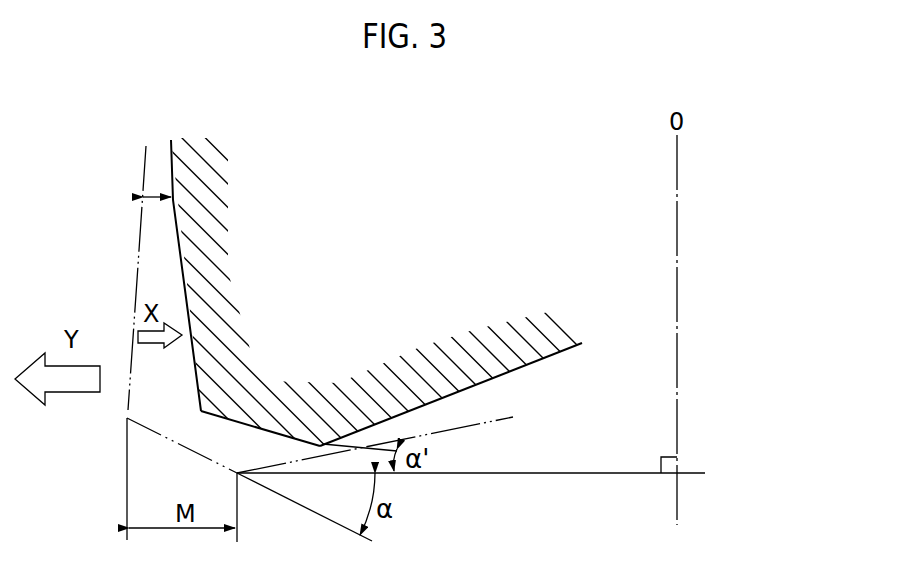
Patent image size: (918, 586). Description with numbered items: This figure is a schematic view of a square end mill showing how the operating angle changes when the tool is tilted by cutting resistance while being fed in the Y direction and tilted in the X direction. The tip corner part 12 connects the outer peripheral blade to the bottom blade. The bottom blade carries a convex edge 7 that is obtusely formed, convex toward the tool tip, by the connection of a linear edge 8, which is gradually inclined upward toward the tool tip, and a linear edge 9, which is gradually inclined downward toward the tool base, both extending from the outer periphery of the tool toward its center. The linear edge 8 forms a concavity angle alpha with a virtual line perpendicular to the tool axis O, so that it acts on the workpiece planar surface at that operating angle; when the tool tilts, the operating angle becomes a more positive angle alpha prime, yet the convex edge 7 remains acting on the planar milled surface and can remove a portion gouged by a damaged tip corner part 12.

The convex edge 7 is at (315, 446).
The linear edge 8 is at (223, 415).
The linear edge 9 is at (522, 367).
The tip corner part 12 is at (196, 408).